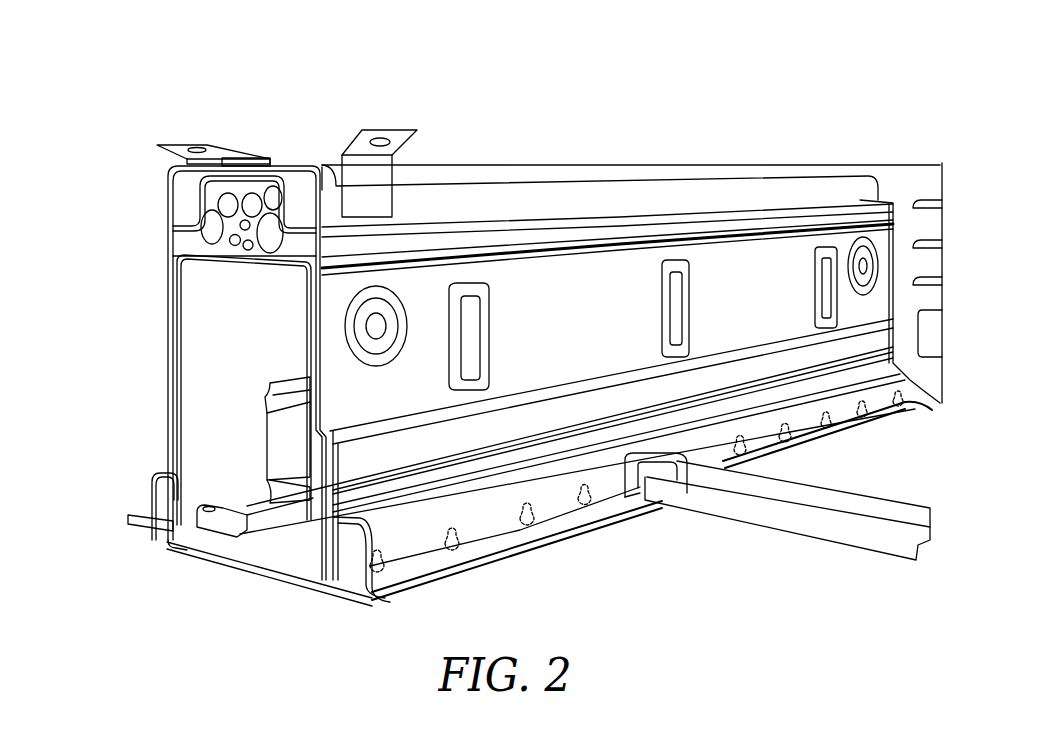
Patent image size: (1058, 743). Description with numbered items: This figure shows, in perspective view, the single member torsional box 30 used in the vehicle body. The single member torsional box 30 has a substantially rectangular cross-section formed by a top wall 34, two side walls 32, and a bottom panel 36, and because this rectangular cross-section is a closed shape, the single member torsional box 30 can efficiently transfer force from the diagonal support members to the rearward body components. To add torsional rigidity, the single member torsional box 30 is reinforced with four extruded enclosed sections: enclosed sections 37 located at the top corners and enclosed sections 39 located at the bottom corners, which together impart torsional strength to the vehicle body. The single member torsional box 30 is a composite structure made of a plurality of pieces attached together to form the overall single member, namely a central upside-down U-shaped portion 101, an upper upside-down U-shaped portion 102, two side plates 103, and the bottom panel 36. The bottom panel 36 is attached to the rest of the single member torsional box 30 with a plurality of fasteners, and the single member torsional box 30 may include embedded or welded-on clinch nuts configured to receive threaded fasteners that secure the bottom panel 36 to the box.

The single member torsional box 30 is at (620, 190).
The side walls 32 is at (308, 357).
The top wall 34 is at (250, 158).
The bottom panel 36 is at (257, 573).
The enclosed sections 37 is at (180, 192).
The enclosed sections 39 is at (150, 483).
The central upside-down U-shaped portion 101 is at (175, 272).
The upper upside-down U-shaped portion 102 is at (455, 207).
The side plates 103 is at (500, 310).